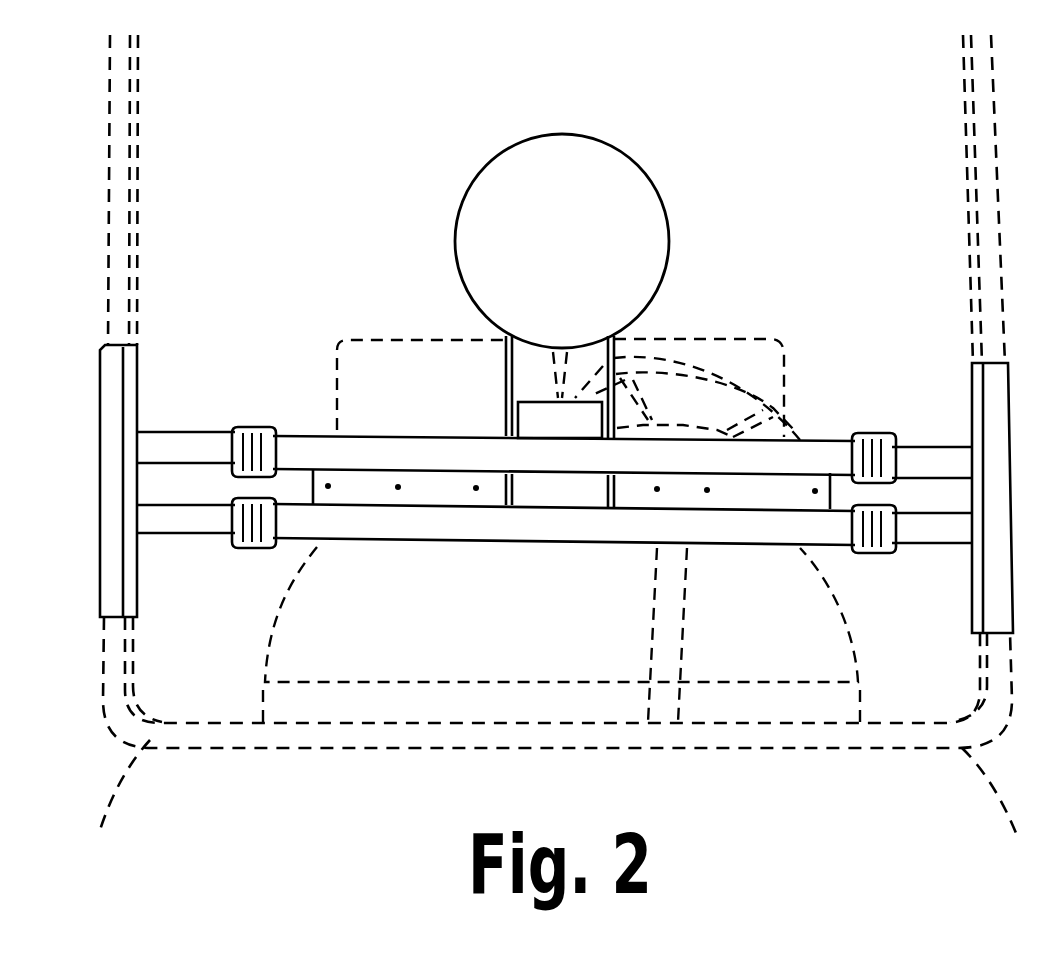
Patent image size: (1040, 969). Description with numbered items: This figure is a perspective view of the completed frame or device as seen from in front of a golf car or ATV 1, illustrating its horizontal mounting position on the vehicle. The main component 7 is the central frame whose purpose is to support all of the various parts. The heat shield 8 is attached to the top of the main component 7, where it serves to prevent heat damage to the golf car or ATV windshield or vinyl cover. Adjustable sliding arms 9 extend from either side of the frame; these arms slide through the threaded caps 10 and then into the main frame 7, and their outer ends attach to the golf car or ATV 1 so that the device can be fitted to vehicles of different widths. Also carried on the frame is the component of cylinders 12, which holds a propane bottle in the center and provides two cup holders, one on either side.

The golf car or ATV 1 is at (138, 112).
The main component 7 is at (322, 430).
The heat shield 8 is at (615, 142).
The adjustable sliding arm 9 is at (137, 395).
The threaded cap 10 is at (253, 427).
The cylinders 12 is at (537, 416).